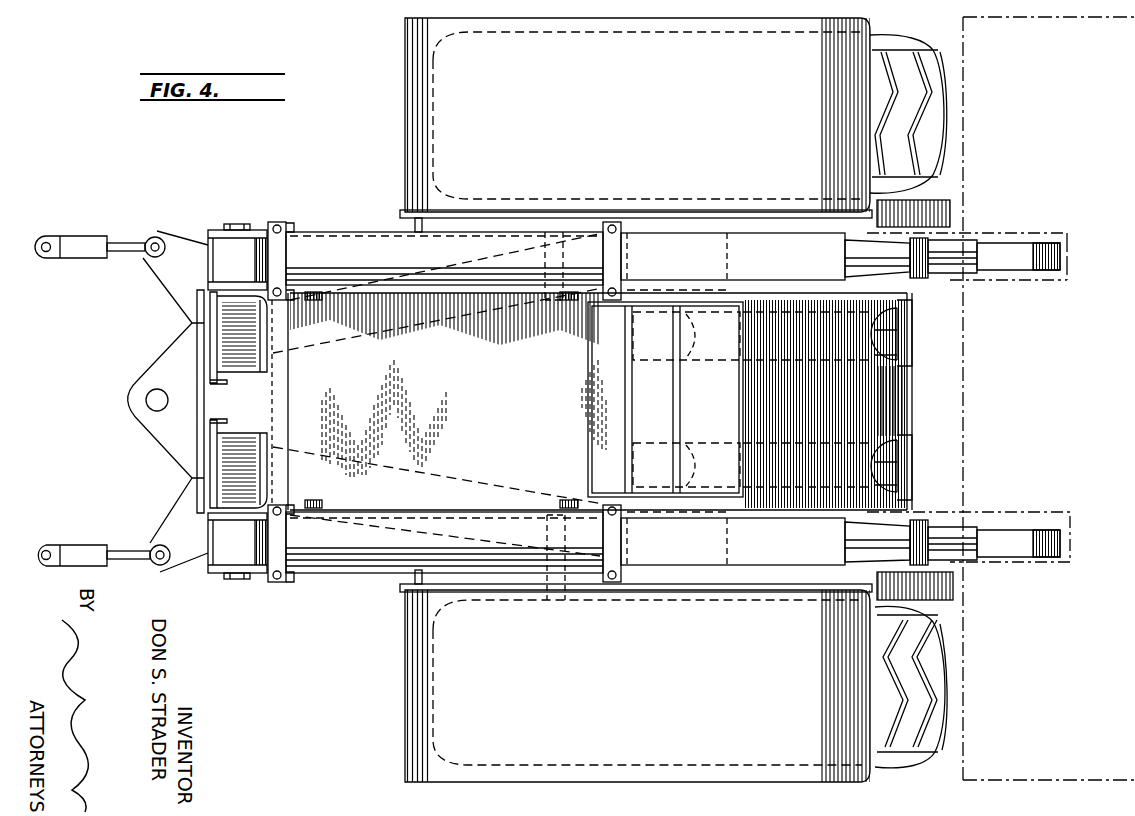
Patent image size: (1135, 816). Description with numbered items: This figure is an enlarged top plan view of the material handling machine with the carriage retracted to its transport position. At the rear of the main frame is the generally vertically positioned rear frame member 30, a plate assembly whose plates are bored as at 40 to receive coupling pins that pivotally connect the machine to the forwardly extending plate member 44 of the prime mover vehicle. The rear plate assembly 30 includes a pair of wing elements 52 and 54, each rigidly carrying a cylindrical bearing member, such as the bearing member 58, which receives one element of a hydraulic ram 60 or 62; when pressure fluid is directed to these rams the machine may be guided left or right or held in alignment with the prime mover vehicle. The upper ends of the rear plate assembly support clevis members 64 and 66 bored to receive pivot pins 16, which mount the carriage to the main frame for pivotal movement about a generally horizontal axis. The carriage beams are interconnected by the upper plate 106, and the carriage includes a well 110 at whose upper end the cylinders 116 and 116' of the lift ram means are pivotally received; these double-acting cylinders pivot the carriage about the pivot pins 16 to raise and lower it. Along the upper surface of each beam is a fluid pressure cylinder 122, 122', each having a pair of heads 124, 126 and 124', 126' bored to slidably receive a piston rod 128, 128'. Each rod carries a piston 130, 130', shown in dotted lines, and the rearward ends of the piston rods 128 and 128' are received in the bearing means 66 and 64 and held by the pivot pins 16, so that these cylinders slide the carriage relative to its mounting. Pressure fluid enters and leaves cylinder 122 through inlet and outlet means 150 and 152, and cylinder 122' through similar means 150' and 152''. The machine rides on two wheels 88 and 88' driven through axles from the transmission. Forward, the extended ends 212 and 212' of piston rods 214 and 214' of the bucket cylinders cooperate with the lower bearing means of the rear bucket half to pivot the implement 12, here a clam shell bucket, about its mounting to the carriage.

The material handling implement 12 is at (1110, 390).
The pivot pins 16 is at (238, 226).
The rear frame member 30 is at (170, 320).
The bore 40 is at (153, 405).
The plate member 44 is at (145, 390).
The wing element 52 is at (168, 268).
The wing element 54 is at (170, 526).
The cylindrical bearing member 58 is at (150, 237).
The hydraulic ram 60 is at (80, 228).
The hydraulic ram 62 is at (83, 532).
The clevis member 64 is at (218, 237).
The clevis member 66 is at (222, 563).
The wheel 88 is at (704, 676).
The wheel 88' is at (713, 125).
The upper plate 106 is at (446, 412).
The well 110 is at (657, 400).
The pressure fluid cylinder 116 is at (910, 433).
The pressure fluid cylinder 116' is at (911, 333).
The fluid pressure cylinder 122 is at (444, 554).
The fluid pressure cylinder 122' is at (444, 231).
The head 124 is at (303, 556).
The head 124' is at (299, 239).
The head 126 is at (644, 565).
The head 126' is at (635, 234).
The piston rod 128 is at (774, 541).
The piston rod 128' is at (774, 256).
The piston 130 is at (541, 570).
The piston 130' is at (533, 234).
The pressure fluid inlet and outlet means 150 is at (316, 485).
The pressure fluid inlet and outlet means 150' is at (314, 332).
The pressure fluid inlet and outlet means 152 is at (529, 499).
The pressure fluid inlet and outlet means 152'' is at (556, 329).
The extended end of piston rod 212 is at (1033, 562).
The extended end of piston rod 212' is at (1029, 277).
The piston rod 214 is at (968, 557).
The piston rod 214' is at (967, 278).